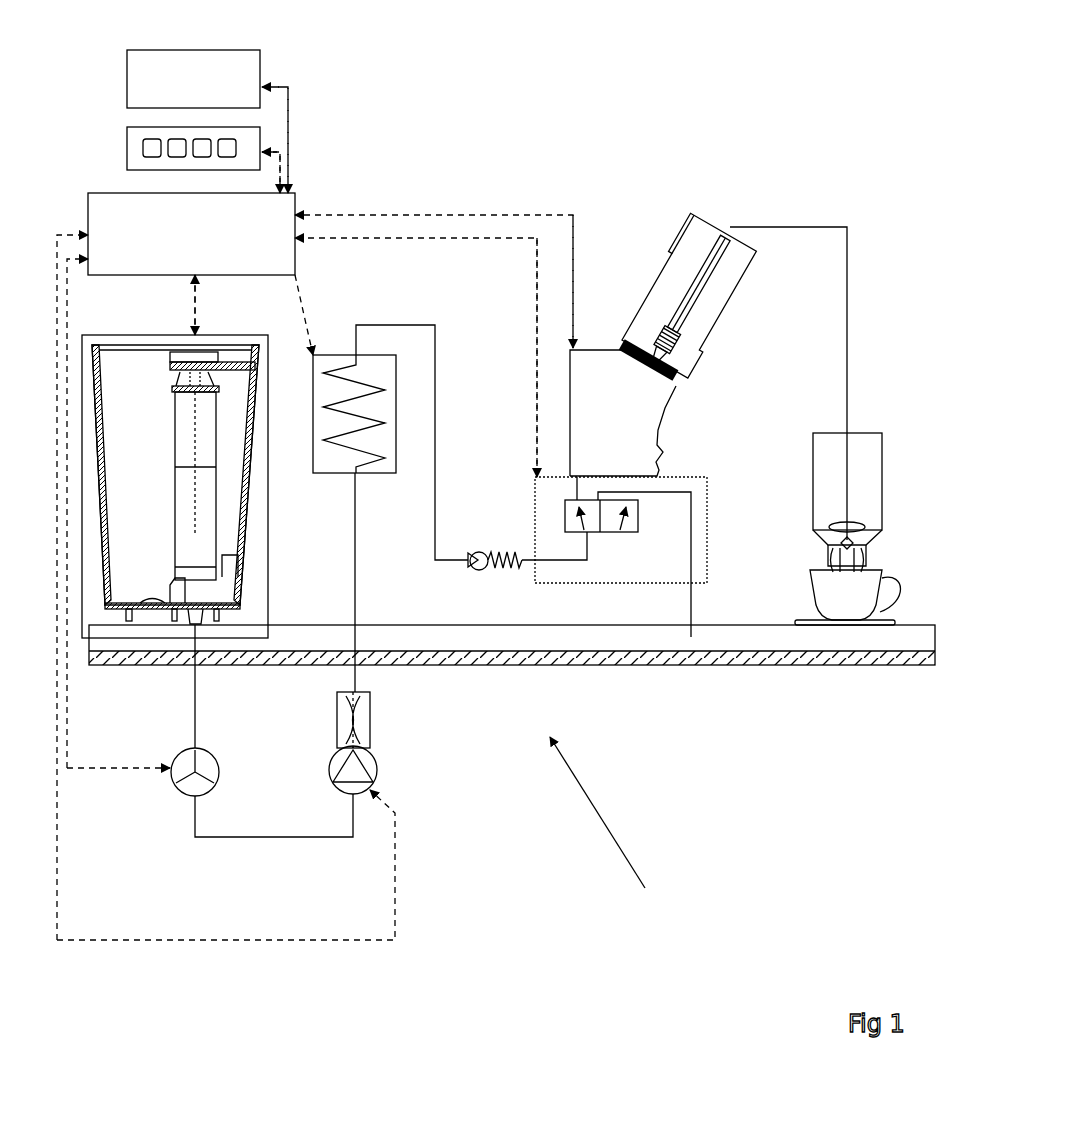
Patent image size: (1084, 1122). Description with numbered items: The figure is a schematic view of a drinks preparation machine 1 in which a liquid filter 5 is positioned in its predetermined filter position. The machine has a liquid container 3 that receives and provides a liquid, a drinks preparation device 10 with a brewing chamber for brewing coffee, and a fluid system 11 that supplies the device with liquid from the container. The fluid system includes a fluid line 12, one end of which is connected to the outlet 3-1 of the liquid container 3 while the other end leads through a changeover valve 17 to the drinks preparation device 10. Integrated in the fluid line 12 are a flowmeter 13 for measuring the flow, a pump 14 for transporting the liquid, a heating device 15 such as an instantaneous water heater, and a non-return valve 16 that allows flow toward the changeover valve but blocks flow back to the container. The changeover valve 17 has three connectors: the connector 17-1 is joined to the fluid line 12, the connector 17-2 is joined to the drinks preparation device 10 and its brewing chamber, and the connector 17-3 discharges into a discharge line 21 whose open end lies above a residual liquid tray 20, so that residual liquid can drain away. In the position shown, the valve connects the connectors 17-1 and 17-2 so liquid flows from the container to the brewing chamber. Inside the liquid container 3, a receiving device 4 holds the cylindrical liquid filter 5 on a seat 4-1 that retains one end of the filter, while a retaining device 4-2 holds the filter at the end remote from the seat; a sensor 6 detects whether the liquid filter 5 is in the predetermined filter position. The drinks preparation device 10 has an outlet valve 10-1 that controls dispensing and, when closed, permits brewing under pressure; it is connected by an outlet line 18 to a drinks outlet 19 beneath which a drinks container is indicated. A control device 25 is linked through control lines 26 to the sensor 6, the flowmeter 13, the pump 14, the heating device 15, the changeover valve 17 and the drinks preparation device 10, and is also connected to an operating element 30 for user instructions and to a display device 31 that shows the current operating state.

The drinks preparation machine 1 is at (740, 49).
The liquid container 3 is at (195, 511).
The outlet 3-1 is at (204, 618).
The receiving device 4 is at (200, 457).
The seat 4-1 is at (165, 592).
The retaining device 4-2 is at (237, 364).
The liquid filter 5 is at (185, 450).
The sensor 6 is at (170, 357).
The drinks preparation device 10 is at (702, 344).
The outlet valve 10-1 is at (692, 352).
The fluid system 11 is at (613, 831).
The fluid line 12 is at (436, 325).
The flowmeter 13 is at (219, 770).
The pump 14 is at (378, 773).
The heating device 15 is at (375, 475).
The non-return valve 16 is at (466, 570).
The changeover valve 17 is at (618, 543).
The connector 17-1 is at (545, 565).
The connector 17-2 is at (577, 483).
The connector 17-3 is at (702, 585).
The outlet line 18 is at (800, 227).
The drinks outlet 19 is at (864, 560).
The residual liquid tray 20 is at (905, 634).
The discharge line 21 is at (691, 622).
The control device 25 is at (207, 250).
The control lines 26 is at (283, 165).
The operating element 30 is at (127, 150).
The display device 31 is at (207, 93).